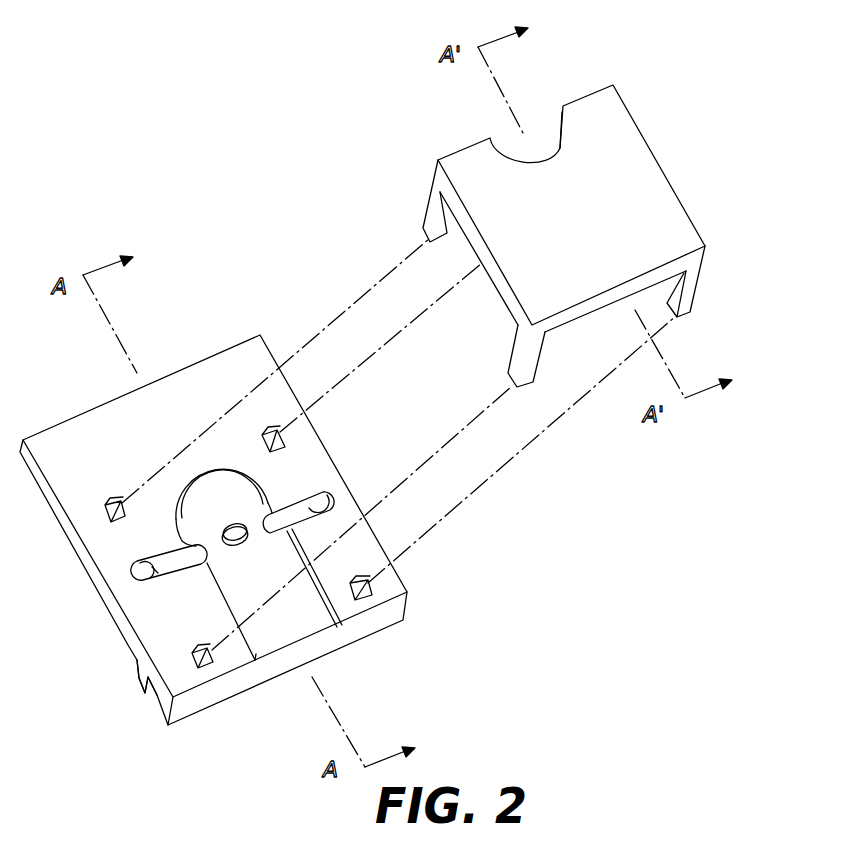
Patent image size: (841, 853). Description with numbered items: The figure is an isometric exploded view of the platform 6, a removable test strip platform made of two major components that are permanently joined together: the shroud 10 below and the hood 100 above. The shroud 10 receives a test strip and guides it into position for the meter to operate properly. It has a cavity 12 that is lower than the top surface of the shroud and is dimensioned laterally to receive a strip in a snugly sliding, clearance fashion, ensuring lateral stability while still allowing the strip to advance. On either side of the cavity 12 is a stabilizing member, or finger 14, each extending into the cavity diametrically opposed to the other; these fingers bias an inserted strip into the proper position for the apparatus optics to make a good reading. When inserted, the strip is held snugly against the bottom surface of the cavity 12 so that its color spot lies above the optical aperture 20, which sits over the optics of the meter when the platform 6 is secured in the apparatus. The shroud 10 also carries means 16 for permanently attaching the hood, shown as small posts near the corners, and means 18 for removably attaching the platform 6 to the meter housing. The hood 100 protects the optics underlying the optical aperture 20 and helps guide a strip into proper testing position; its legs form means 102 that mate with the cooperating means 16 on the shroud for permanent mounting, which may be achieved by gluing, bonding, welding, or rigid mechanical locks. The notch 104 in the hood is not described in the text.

The platform 6 is at (230, 247).
The shroud 10 is at (207, 405).
The cavity 12 is at (269, 583).
The finger 14 is at (143, 561).
The means for permanently attaching the hood 16 is at (272, 430).
The means for removably attaching the platform 18 is at (138, 684).
The optical aperture 20 is at (230, 532).
The hood 100 is at (586, 226).
The means for permanently attaching the hood to the shroud 102 is at (430, 220).
The notch 104 is at (548, 132).